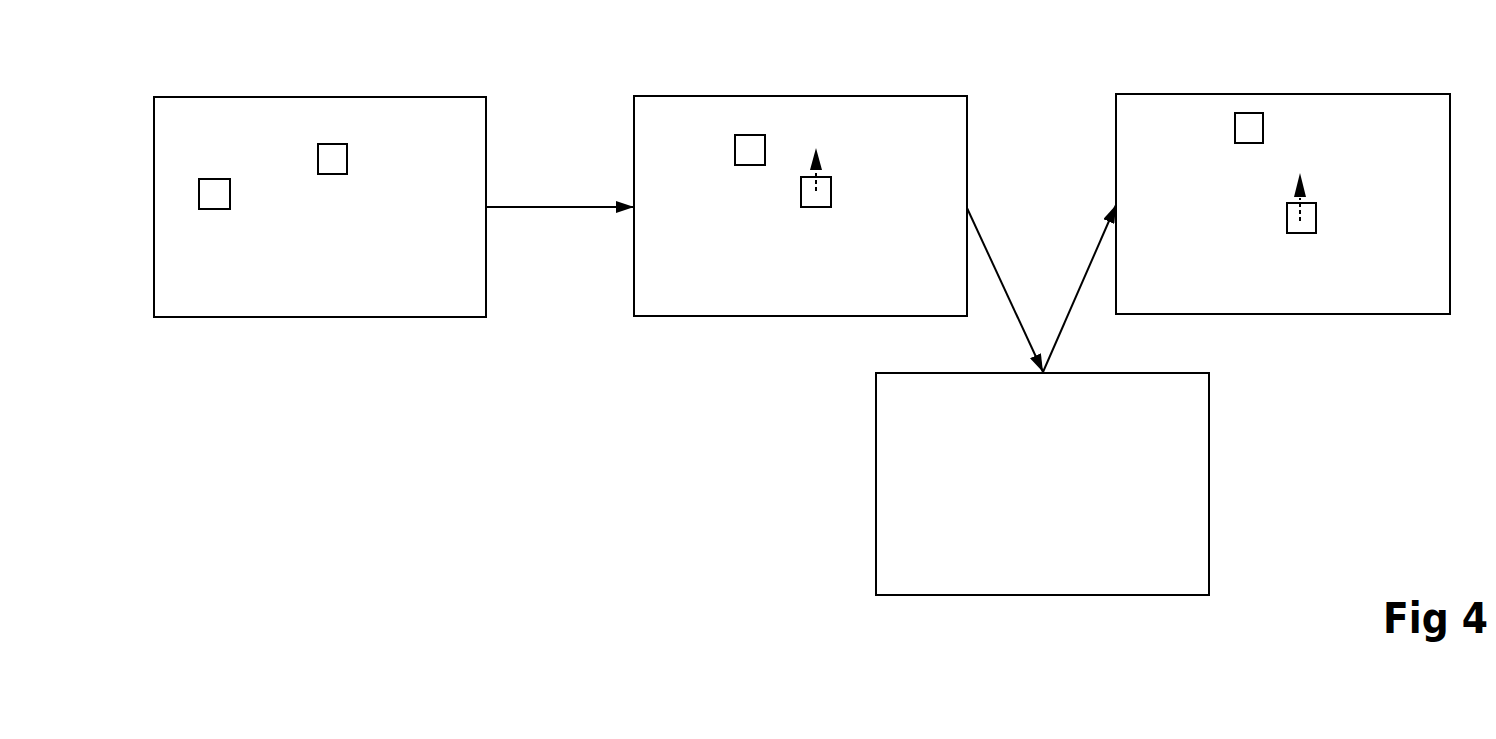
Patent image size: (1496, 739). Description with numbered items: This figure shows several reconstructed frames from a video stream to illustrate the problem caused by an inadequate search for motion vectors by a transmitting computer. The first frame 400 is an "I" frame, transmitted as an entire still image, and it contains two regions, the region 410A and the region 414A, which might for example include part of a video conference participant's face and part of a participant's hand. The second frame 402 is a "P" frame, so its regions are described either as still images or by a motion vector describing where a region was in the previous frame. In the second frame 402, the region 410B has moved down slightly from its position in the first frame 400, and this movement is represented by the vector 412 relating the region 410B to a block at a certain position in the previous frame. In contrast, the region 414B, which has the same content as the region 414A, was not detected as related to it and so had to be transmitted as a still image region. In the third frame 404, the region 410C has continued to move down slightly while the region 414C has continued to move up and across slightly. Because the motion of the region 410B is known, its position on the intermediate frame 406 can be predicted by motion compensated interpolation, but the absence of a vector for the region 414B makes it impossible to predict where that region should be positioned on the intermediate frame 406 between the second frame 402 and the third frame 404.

The first frame 400 is at (320, 168).
The second frame 402 is at (800, 167).
The third frame 404 is at (1283, 164).
The intermediate frame 406 is at (1042, 501).
The region 410A is at (347, 143).
The region 410B is at (801, 207).
The region 410C is at (1316, 233).
The vector 412 is at (836, 151).
The region 414A is at (229, 179).
The region 414B is at (735, 135).
The region 414C is at (1235, 113).